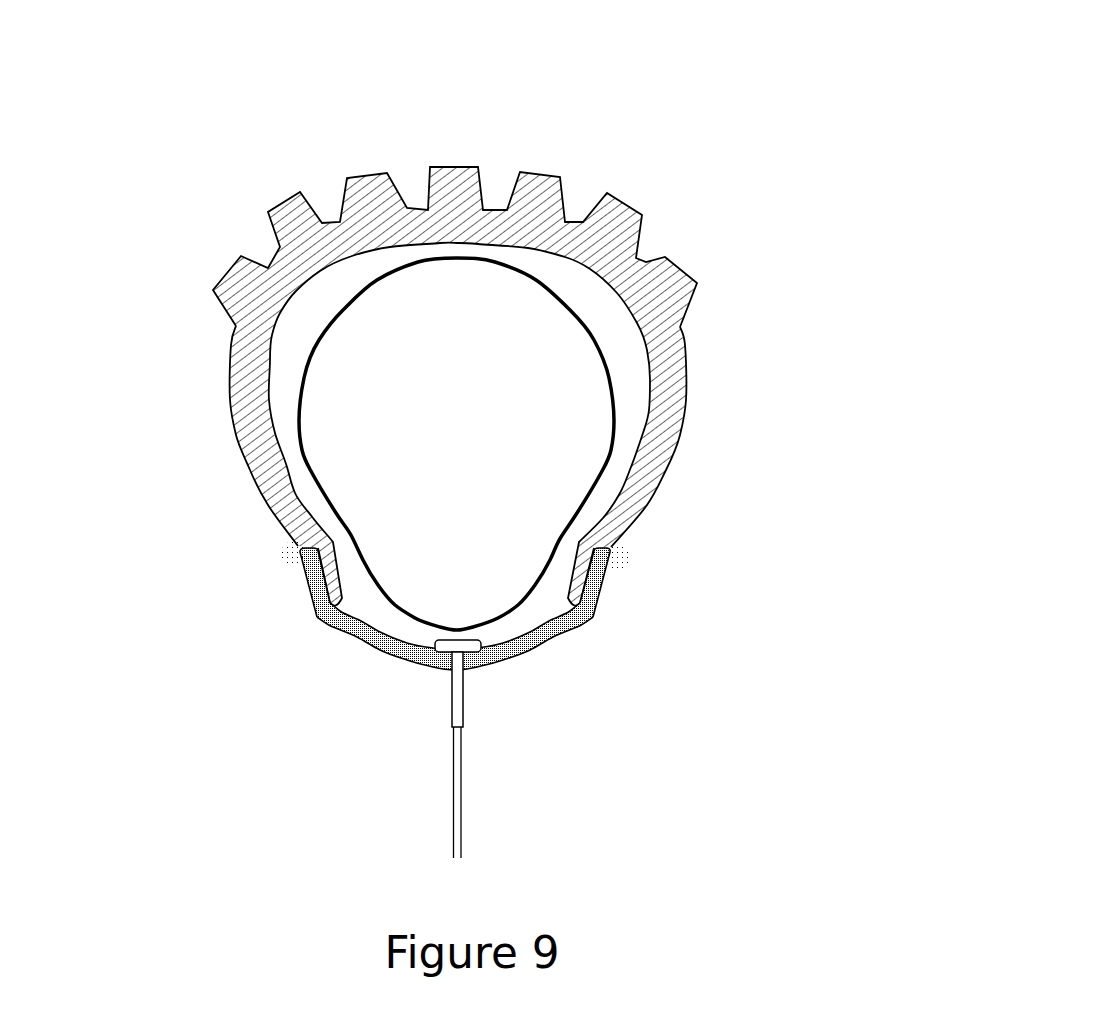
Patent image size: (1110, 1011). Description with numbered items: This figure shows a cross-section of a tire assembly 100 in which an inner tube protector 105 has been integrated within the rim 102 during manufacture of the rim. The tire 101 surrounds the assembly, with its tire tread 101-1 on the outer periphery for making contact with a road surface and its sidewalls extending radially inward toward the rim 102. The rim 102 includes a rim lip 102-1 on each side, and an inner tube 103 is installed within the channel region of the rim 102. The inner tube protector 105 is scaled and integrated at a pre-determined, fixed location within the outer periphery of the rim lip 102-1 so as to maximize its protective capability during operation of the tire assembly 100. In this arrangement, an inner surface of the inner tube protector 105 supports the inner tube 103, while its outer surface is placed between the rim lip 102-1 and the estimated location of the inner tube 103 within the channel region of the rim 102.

The tire assembly 100 is at (568, 113).
The tire 101 is at (519, 386).
The tire tread 101-1 is at (636, 191).
The rim 102 is at (389, 645).
The rim lip 102-1 is at (313, 517).
The inner tube 103 is at (313, 433).
The inner tube protector 105 is at (281, 562).